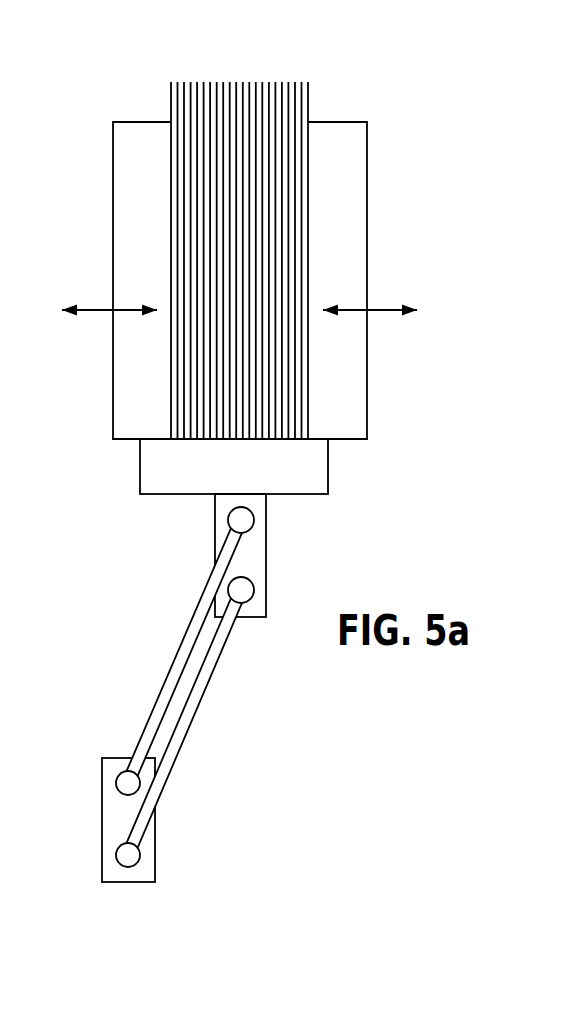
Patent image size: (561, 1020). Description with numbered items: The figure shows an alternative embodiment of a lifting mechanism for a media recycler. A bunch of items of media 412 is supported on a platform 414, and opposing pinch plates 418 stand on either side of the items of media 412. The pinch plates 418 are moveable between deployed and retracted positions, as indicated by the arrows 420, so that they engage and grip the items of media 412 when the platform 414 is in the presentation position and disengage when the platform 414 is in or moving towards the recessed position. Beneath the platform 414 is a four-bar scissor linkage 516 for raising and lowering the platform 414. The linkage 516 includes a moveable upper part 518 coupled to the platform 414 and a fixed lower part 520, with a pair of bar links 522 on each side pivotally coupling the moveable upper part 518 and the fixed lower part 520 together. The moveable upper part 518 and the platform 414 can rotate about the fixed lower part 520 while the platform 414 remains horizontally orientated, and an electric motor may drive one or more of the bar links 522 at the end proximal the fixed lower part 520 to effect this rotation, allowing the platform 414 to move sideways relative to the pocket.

The items of media 412 is at (257, 83).
The platform 414 is at (140, 472).
The pinch plates 418 is at (113, 148).
The arrows 420 is at (98, 311).
The four-bar scissor linkage 516 is at (189, 688).
The moveable upper part 518 is at (267, 561).
The fixed lower part 520 is at (102, 812).
The bar links 522 is at (177, 657).